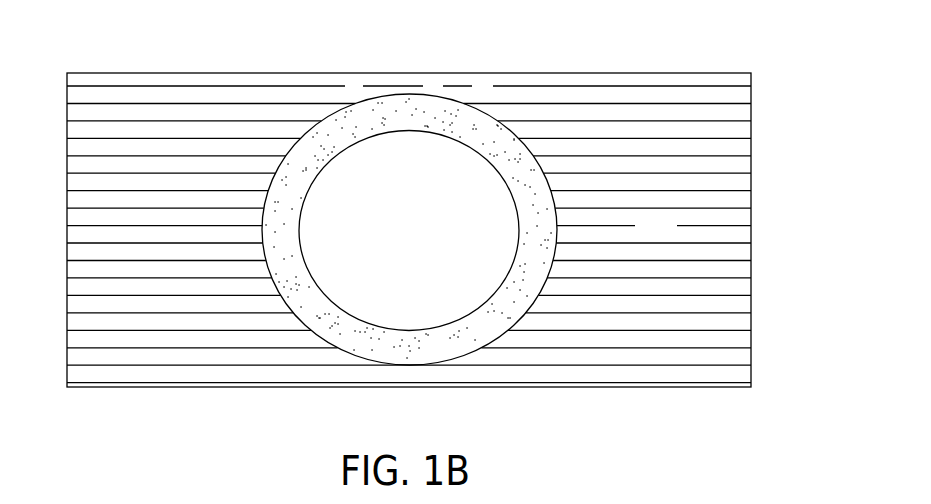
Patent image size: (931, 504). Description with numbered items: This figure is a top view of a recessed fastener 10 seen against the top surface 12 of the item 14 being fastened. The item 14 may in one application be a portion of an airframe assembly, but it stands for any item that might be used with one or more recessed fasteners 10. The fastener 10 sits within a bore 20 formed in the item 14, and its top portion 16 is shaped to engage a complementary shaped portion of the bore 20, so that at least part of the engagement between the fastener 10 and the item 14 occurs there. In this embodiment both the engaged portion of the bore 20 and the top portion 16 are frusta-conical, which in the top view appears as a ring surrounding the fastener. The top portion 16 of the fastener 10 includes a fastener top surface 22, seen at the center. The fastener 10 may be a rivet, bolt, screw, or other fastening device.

The item 14 is at (627, 73).
The top surface 12 is at (643, 238).
The bore 20 is at (363, 118).
The top portion 16 is at (464, 148).
The recessed fastener 10 is at (422, 130).
The fastener top surface 22 is at (393, 240).